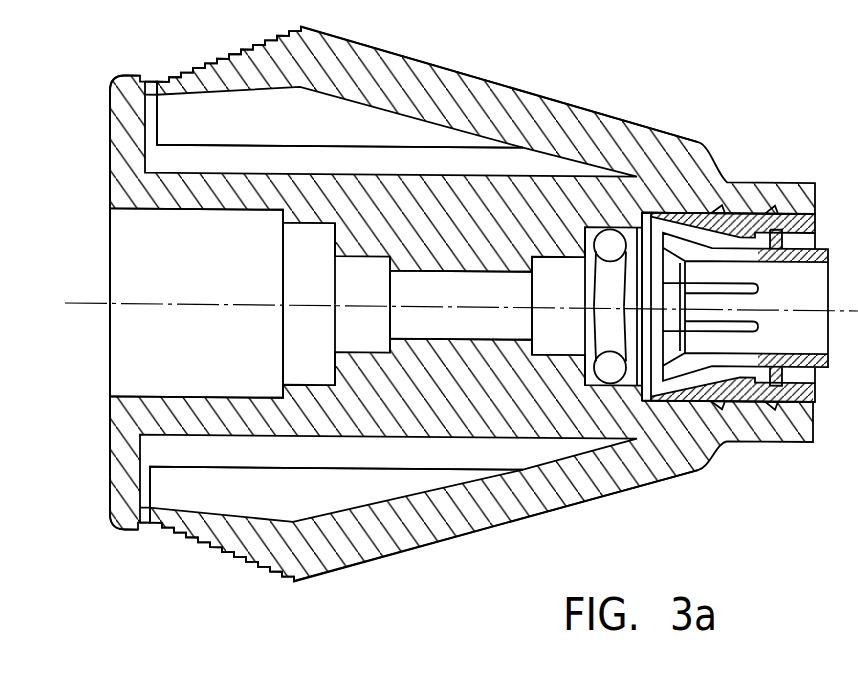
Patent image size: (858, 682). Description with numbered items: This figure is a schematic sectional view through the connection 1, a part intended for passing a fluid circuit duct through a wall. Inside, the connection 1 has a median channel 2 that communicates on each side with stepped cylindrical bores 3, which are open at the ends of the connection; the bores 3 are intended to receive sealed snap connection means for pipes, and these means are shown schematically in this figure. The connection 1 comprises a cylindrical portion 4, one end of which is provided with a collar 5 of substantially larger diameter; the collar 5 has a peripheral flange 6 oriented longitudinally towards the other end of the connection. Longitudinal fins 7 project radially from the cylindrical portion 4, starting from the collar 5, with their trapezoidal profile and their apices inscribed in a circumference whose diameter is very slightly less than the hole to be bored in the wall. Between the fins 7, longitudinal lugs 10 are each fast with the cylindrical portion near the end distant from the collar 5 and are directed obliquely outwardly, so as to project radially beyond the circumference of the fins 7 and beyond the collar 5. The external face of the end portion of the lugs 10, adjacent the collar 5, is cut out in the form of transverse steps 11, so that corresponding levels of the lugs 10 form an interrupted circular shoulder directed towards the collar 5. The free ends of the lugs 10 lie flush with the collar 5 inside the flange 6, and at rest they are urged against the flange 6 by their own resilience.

The connection 1 is at (676, 97).
The median channel 2 is at (452, 300).
The stepped cylindrical bores 3 is at (237, 282).
The cylindrical portion 4 is at (760, 437).
The collar 5 is at (112, 150).
The flange 6 is at (157, 78).
The longitudinal fins 7 is at (222, 160).
The longitudinal lugs 10 is at (504, 100).
The transverse steps 11 is at (214, 62).